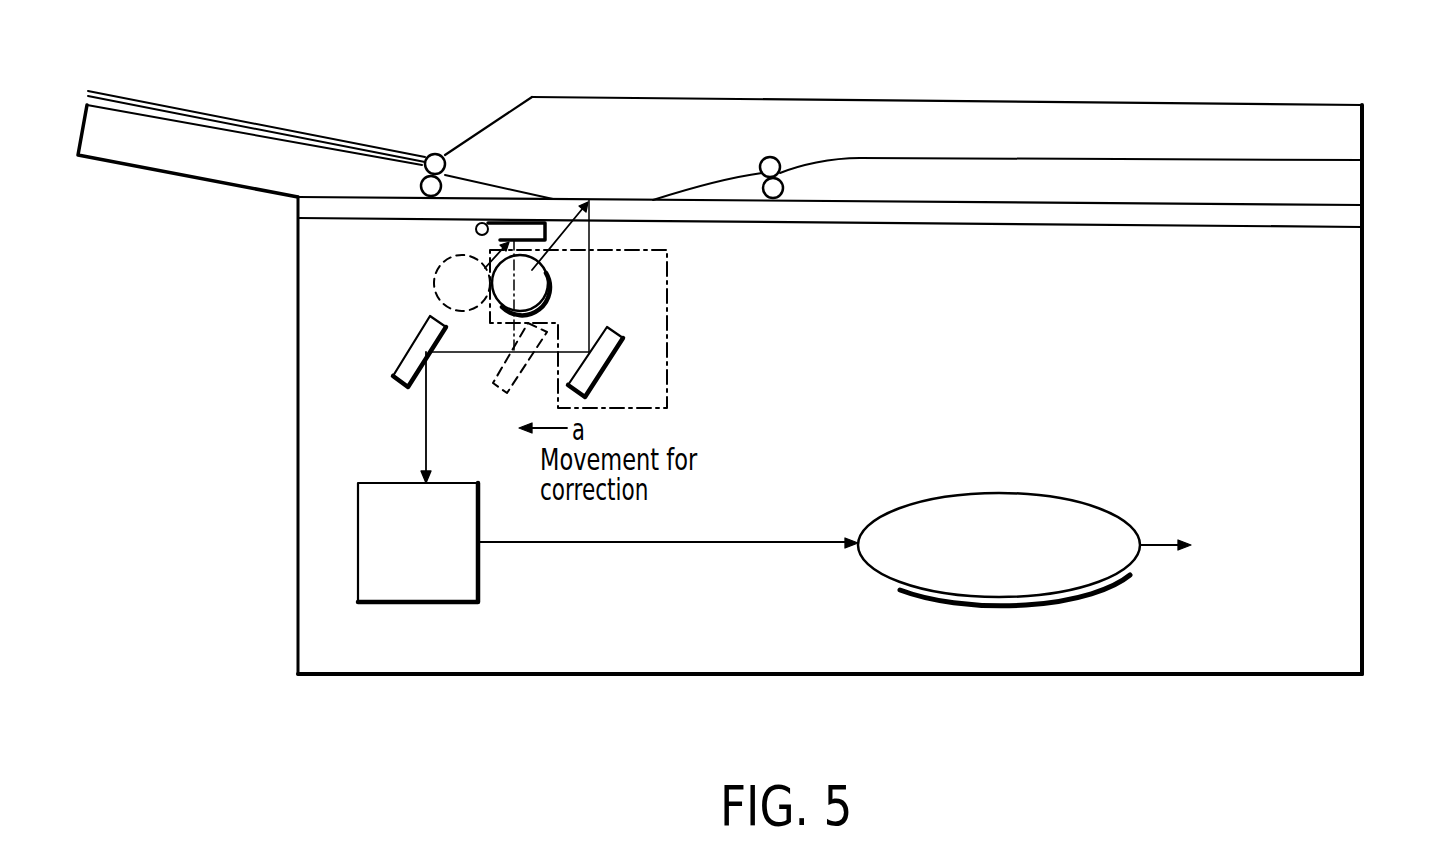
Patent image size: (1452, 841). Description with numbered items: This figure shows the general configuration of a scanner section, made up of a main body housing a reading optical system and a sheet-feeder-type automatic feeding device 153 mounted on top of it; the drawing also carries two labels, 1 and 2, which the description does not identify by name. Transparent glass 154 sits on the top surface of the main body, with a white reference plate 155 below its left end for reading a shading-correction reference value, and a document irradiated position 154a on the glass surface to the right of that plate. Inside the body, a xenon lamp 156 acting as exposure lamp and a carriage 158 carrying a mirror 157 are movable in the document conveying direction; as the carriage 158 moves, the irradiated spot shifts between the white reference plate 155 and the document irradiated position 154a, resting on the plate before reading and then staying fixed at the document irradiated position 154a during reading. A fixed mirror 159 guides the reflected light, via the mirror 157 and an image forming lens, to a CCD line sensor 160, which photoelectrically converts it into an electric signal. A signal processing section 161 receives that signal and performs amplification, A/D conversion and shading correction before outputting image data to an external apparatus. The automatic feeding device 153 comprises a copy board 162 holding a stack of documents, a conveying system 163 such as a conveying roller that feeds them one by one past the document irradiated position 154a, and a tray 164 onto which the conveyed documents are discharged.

The image reading apparatus 1 is at (551, 700).
The housing 2 is at (1364, 411).
The automatic feeding device 153 is at (1070, 100).
The transparent glass 154 is at (1128, 228).
The document irradiated position 154a is at (590, 198).
The white reference plate 155 is at (476, 231).
The xenon lamp 156 is at (548, 283).
The mirror 157 is at (617, 353).
The carriage 158 is at (667, 362).
The mirror 159 is at (395, 350).
The CCD line sensor 160 is at (440, 483).
The signal processing section 161 is at (1063, 494).
The copy board 162 is at (115, 156).
The conveying system 163 is at (447, 166).
The tray 164 is at (1168, 160).